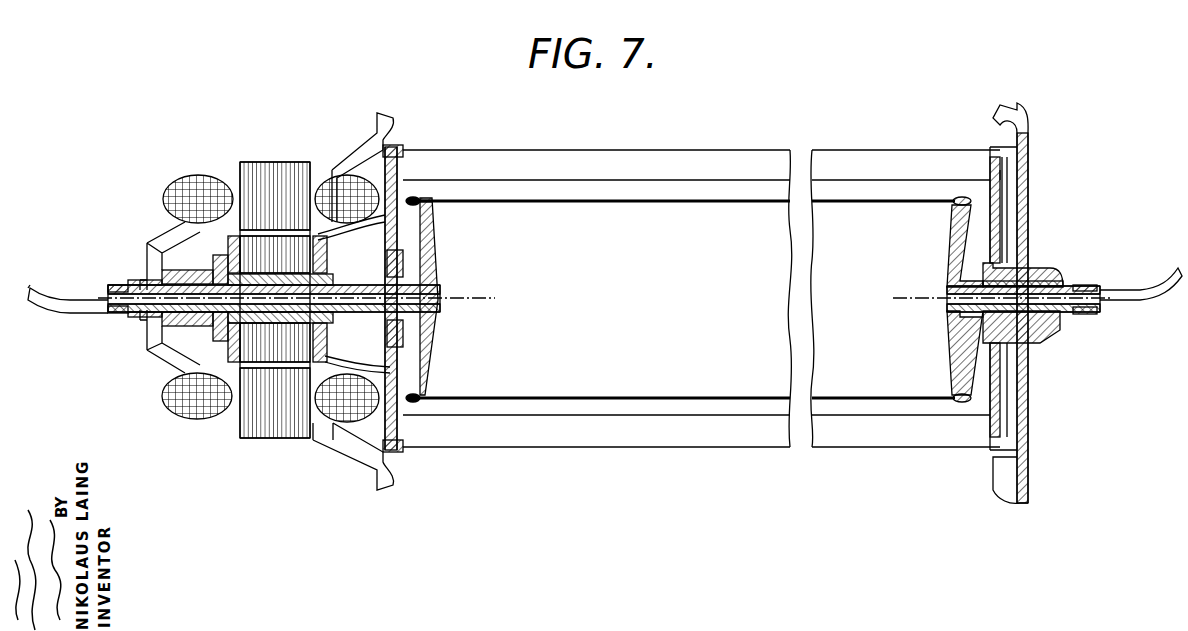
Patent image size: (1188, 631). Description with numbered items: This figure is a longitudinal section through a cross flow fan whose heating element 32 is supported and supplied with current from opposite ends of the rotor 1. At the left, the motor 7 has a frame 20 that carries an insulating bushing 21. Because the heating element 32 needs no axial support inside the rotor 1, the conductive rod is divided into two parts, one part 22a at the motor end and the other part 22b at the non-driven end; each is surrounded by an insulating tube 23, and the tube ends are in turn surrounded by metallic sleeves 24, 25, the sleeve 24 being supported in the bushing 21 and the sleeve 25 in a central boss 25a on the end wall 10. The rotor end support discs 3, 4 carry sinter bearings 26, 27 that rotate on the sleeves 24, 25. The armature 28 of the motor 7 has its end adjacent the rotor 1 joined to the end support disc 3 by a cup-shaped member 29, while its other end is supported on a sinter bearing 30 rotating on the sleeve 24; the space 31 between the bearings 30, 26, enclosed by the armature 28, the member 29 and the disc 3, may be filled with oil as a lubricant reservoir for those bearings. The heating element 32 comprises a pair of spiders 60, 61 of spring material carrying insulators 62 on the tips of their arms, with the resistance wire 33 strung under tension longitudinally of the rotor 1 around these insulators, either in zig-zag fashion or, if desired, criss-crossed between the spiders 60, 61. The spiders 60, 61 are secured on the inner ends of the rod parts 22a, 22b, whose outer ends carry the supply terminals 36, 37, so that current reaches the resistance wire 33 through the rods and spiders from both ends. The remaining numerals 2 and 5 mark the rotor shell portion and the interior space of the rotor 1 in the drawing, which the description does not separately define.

The rotor 1 is at (543, 450).
The tube right section 2 is at (877, 426).
The rotor end support disc 3 is at (397, 368).
The rotor end support disc 4 is at (1000, 378).
The tube interior 5 is at (592, 370).
The motor 7 is at (292, 160).
The end wall 10 is at (1030, 182).
The frame 20 is at (168, 240).
The insulating bushing 21 is at (168, 352).
The rod part 22a is at (152, 338).
The rod part 22b is at (1100, 312).
The insulating tube 23 is at (140, 318).
The metallic sleeve 24 is at (198, 362).
The metallic sleeve 25 is at (1062, 287).
The central boss 25a is at (1050, 265).
The sinter bearing 26 is at (407, 284).
The sinter bearing 27 is at (1026, 342).
The armature 28 is at (216, 420).
The cup-shaped member 29 is at (357, 178).
The sinter bearing 30 is at (222, 176).
The space 31 is at (370, 243).
The heating element 32 is at (490, 400).
The resistance wire 33 is at (535, 200).
The supply terminal 36 is at (122, 278).
The supply terminal 37 is at (1086, 315).
The spider 60 is at (436, 212).
The spider 61 is at (950, 250).
The insulator 62 is at (414, 197).